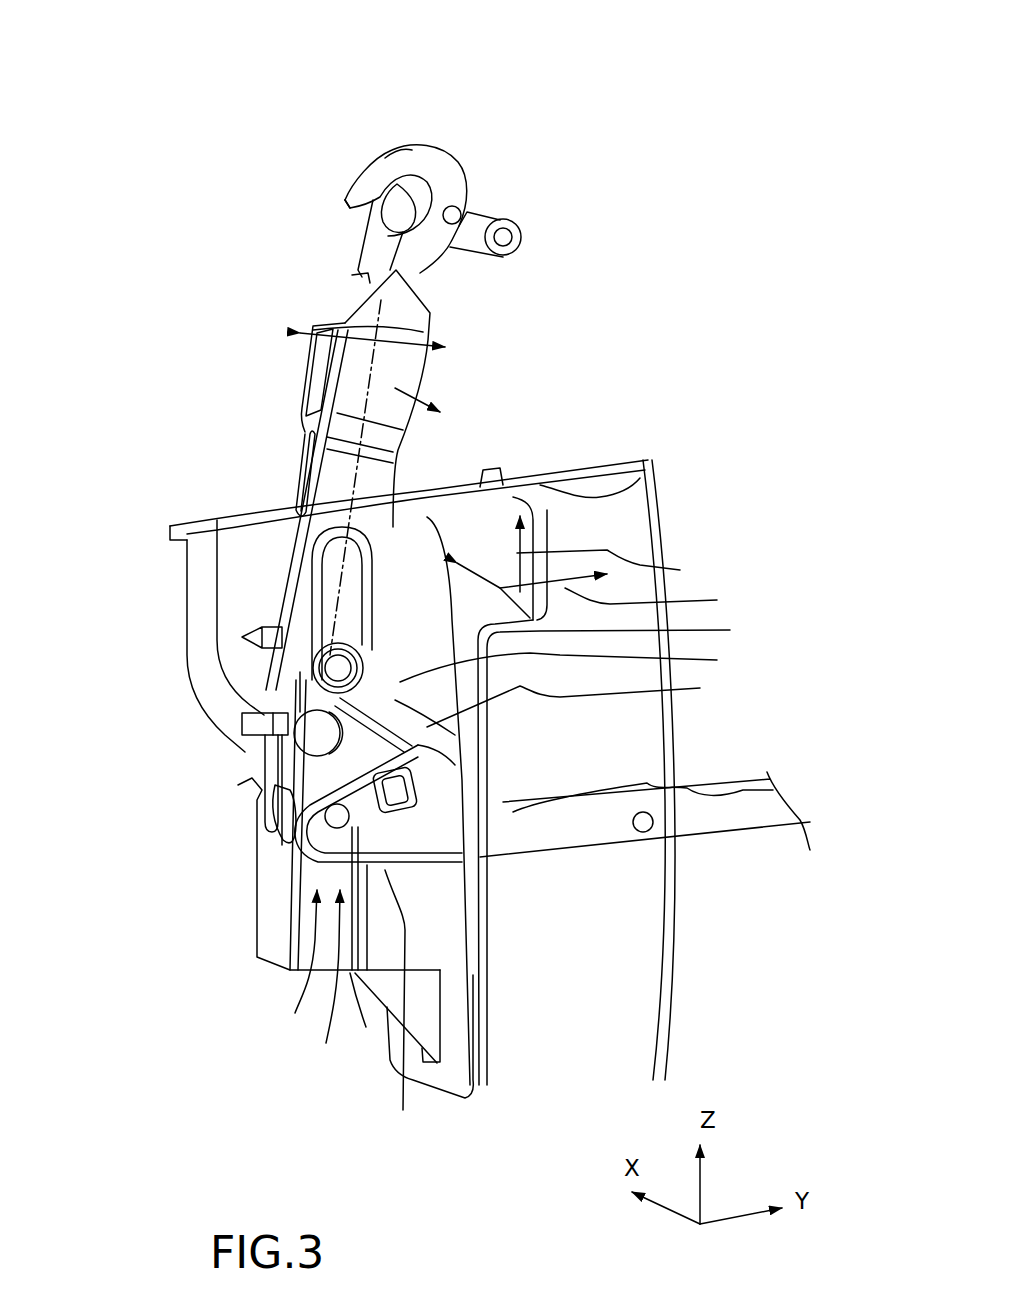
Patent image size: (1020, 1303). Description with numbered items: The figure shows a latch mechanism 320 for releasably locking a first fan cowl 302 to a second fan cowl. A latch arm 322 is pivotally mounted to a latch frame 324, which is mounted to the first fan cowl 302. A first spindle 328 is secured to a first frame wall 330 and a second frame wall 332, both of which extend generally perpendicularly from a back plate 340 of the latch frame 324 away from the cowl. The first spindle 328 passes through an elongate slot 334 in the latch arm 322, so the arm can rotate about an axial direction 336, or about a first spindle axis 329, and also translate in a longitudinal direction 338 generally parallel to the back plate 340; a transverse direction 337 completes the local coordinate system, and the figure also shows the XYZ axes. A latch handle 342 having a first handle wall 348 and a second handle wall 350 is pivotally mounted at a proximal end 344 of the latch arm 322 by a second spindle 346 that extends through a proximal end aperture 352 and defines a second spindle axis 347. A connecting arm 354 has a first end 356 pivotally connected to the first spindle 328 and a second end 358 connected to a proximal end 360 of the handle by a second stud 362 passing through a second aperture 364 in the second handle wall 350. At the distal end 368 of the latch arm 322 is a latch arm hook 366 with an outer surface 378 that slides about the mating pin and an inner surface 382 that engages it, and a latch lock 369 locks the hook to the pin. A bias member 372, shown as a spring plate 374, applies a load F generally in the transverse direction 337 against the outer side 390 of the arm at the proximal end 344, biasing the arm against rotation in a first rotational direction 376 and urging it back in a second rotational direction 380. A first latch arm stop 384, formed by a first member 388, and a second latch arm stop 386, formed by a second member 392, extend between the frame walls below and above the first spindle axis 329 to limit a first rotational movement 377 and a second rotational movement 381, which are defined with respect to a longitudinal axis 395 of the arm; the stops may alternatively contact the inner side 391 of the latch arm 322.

The latch mechanism 320 is at (224, 104).
The first fan cowl 302 is at (640, 537).
The latch arm 322 is at (417, 358).
The latch frame 324 is at (502, 512).
The first spindle 328 is at (340, 817).
The first spindle axis 329 is at (700, 662).
The first frame wall 330 is at (187, 590).
The second frame wall 332 is at (237, 562).
The elongate slot 334 is at (310, 590).
The axial direction 336 is at (720, 631).
The transverse direction 337 is at (700, 601).
The longitudinal direction 338 is at (660, 571).
The back plate 340 is at (655, 467).
The latch handle 342 is at (745, 820).
The proximal end 344 is at (281, 967).
The second spindle 346 is at (395, 795).
The second spindle axis 347 is at (440, 1098).
The first handle wall 348 is at (563, 793).
The second handle wall 350 is at (570, 832).
The proximal end aperture 352 is at (357, 1022).
The connecting arm 354 is at (517, 767).
The first end 356 is at (420, 530).
The second end 358 is at (453, 745).
The proximal end 360 is at (315, 986).
The second stud 362 is at (340, 817).
The second aperture 364 is at (417, 800).
The latch arm hook 366 is at (437, 163).
The distal end 368 is at (465, 272).
The latch lock 369 is at (475, 218).
The bias member 372 is at (263, 862).
The spring plate 374 is at (270, 893).
The first rotational direction 376 is at (420, 402).
The first rotational movement 377 is at (430, 313).
The outer surface 378 is at (390, 151).
The second rotational direction 380 is at (338, 375).
The second rotational movement 381 is at (322, 313).
The inner surface 382 is at (352, 206).
The first latch arm stop 384 is at (243, 733).
The second latch arm stop 386 is at (242, 634).
The first member 388 is at (248, 783).
The outer side 390 is at (287, 585).
The inner side 391 is at (325, 478).
The second member 392 is at (250, 642).
The longitudinal axis 395 is at (310, 466).